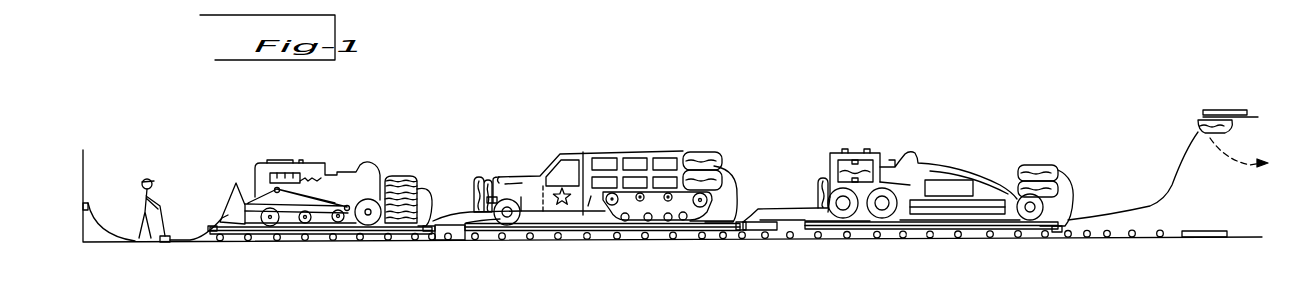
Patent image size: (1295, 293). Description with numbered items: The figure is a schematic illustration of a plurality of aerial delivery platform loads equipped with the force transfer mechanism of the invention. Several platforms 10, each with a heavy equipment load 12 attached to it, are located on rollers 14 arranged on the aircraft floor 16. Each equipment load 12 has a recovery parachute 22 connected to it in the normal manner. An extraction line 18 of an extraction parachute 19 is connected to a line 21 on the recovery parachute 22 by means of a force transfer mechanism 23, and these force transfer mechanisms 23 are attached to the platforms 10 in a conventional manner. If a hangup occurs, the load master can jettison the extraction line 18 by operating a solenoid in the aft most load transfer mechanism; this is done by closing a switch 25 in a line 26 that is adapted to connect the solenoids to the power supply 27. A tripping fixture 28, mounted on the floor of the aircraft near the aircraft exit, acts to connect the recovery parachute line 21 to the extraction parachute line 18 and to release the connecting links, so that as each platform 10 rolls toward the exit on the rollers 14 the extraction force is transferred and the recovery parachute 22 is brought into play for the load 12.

The platform 10 is at (375, 238).
The heavy equipment load 12 is at (368, 163).
The rollers 14 is at (587, 237).
The aircraft floor 16 is at (1110, 240).
The extraction line 18 is at (448, 213).
The extraction parachute 19 is at (485, 183).
The recovery parachute line 21 is at (430, 207).
The recovery parachute 22 is at (407, 176).
The force transfer mechanism 23 is at (426, 233).
The switch 25 is at (163, 243).
The line 26 is at (198, 240).
The power supply 27 is at (90, 202).
The tripping fixture 28 is at (1202, 230).